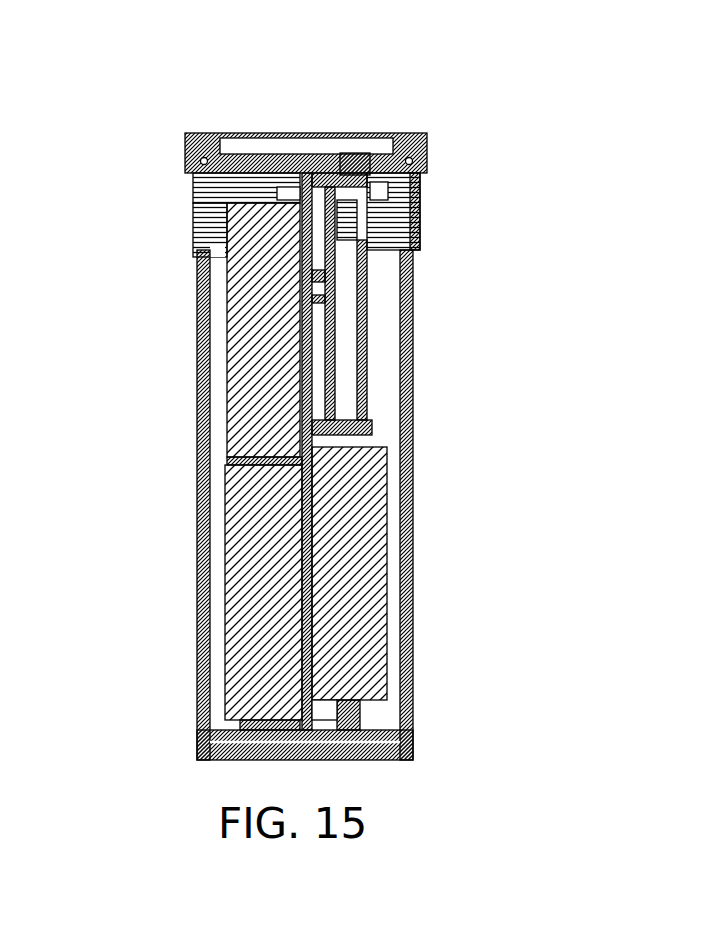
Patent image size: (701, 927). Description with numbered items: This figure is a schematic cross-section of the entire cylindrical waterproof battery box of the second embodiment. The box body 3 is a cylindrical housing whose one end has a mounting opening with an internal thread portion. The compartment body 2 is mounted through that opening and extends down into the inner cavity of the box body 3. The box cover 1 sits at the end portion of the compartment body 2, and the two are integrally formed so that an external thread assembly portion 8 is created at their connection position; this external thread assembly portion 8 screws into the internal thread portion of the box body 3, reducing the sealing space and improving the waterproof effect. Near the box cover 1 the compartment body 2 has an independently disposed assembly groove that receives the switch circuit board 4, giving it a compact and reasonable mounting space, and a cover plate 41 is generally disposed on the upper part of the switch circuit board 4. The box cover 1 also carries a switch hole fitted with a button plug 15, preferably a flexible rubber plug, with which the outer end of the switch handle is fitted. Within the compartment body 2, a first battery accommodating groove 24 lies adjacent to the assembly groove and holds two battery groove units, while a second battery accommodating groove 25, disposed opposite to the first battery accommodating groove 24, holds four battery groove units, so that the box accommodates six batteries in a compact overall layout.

The box cover 1 is at (187, 152).
The compartment body 2 is at (194, 245).
The box body 3 is at (198, 506).
The switch circuit board 4 is at (337, 342).
The external thread assembly portion 8 is at (425, 198).
The button plug 15 is at (352, 150).
The first battery accommodating groove 24 is at (352, 700).
The second battery accommodating groove 25 is at (296, 462).
The cover plate 41 is at (364, 367).